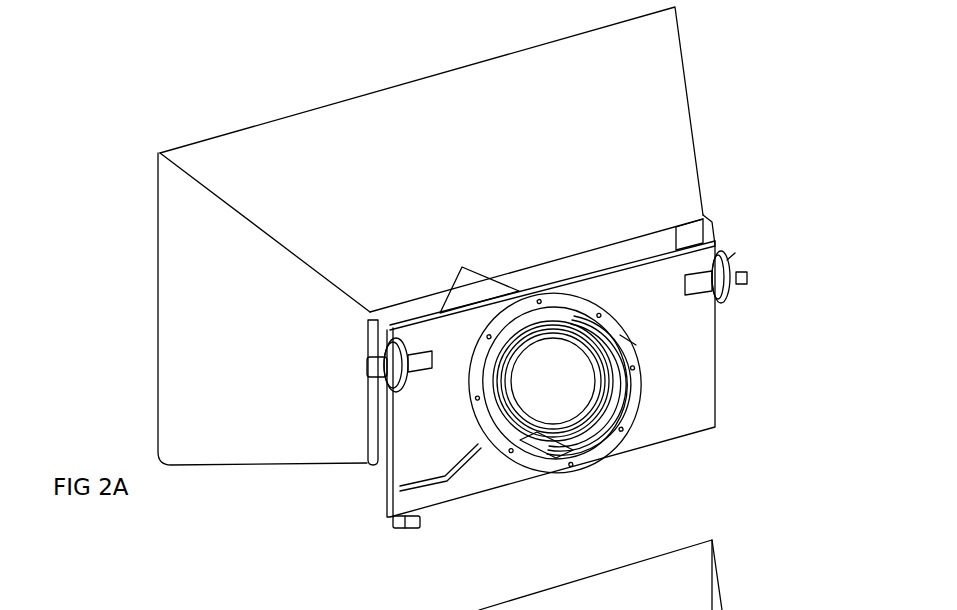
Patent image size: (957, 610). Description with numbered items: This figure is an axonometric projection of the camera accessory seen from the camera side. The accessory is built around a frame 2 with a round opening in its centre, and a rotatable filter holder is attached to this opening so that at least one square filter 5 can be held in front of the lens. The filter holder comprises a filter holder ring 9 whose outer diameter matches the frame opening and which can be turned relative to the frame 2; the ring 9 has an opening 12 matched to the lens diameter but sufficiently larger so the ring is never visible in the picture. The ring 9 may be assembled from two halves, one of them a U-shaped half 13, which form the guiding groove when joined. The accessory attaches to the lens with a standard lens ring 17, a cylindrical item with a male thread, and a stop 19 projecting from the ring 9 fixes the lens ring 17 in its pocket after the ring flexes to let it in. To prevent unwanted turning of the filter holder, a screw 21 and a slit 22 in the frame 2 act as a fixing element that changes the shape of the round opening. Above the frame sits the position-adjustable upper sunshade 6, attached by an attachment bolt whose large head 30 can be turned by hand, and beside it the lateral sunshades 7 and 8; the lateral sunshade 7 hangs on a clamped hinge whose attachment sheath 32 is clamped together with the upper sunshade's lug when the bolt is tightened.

The frame 2 is at (685, 337).
The square filter 5 is at (472, 285).
The upper sunshade 6 is at (648, 182).
The lateral sunshade 7 is at (687, 233).
The lateral sunshade 8 is at (235, 348).
The filter holder ring 9 is at (608, 369).
The opening 12 is at (573, 398).
The U-shaped half 13 is at (623, 323).
The lens ring 17 is at (537, 432).
The stop 19 is at (598, 325).
The screw 21 is at (395, 527).
The slit 22 is at (397, 488).
The head 30 is at (742, 278).
The attachment sheath 32 is at (374, 353).